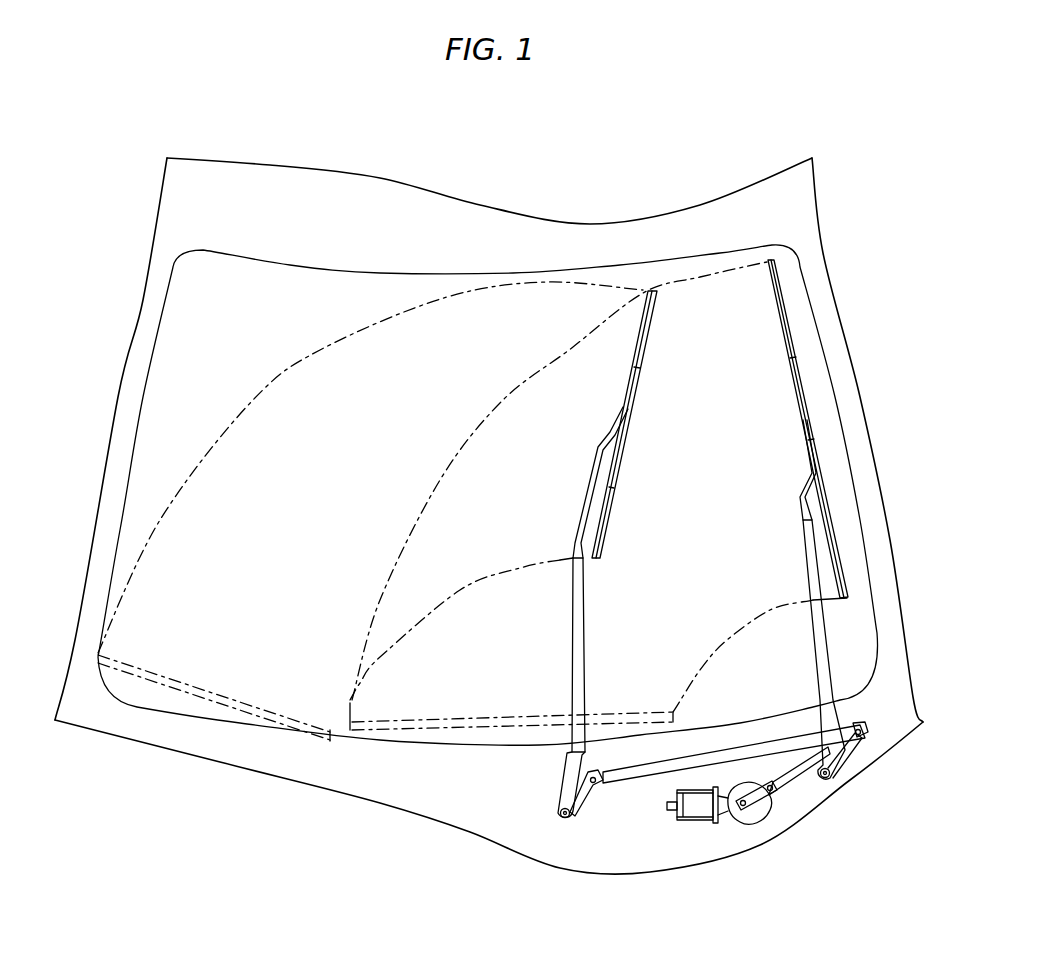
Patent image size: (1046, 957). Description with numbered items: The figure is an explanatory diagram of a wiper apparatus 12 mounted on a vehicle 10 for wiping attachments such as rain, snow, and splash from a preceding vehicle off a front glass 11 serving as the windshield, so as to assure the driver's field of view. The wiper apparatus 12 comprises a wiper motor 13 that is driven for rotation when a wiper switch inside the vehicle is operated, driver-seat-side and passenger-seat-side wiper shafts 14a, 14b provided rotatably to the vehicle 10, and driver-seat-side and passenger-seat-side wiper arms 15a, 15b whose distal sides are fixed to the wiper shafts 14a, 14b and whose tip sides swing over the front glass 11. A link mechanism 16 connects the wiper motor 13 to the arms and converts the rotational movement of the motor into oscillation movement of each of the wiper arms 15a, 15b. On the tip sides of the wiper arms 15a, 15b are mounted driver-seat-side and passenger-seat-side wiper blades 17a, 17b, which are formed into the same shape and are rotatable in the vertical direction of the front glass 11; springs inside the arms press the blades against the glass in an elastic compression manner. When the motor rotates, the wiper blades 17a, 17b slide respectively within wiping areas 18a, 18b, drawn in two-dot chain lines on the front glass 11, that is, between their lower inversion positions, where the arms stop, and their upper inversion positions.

The vehicle 10 is at (620, 193).
The front glass 11 is at (218, 297).
The wiper apparatus 12 is at (709, 825).
The wiper motor 13 is at (693, 822).
The driver-seat-side wiper shaft 14a is at (824, 779).
The passenger-seat-side wiper shaft 14b is at (565, 819).
The driver-seat-side wiper arm 15a is at (830, 630).
The passenger-seat-side wiper arm 15b is at (583, 630).
The link mechanism 16 is at (647, 781).
The driver-seat-side wiper blade 17a is at (802, 375).
The passenger-seat-side wiper blade 17b is at (639, 376).
The driver-seat-side wiping area 18a is at (707, 273).
The passenger-seat-side wiping area 18b is at (365, 318).